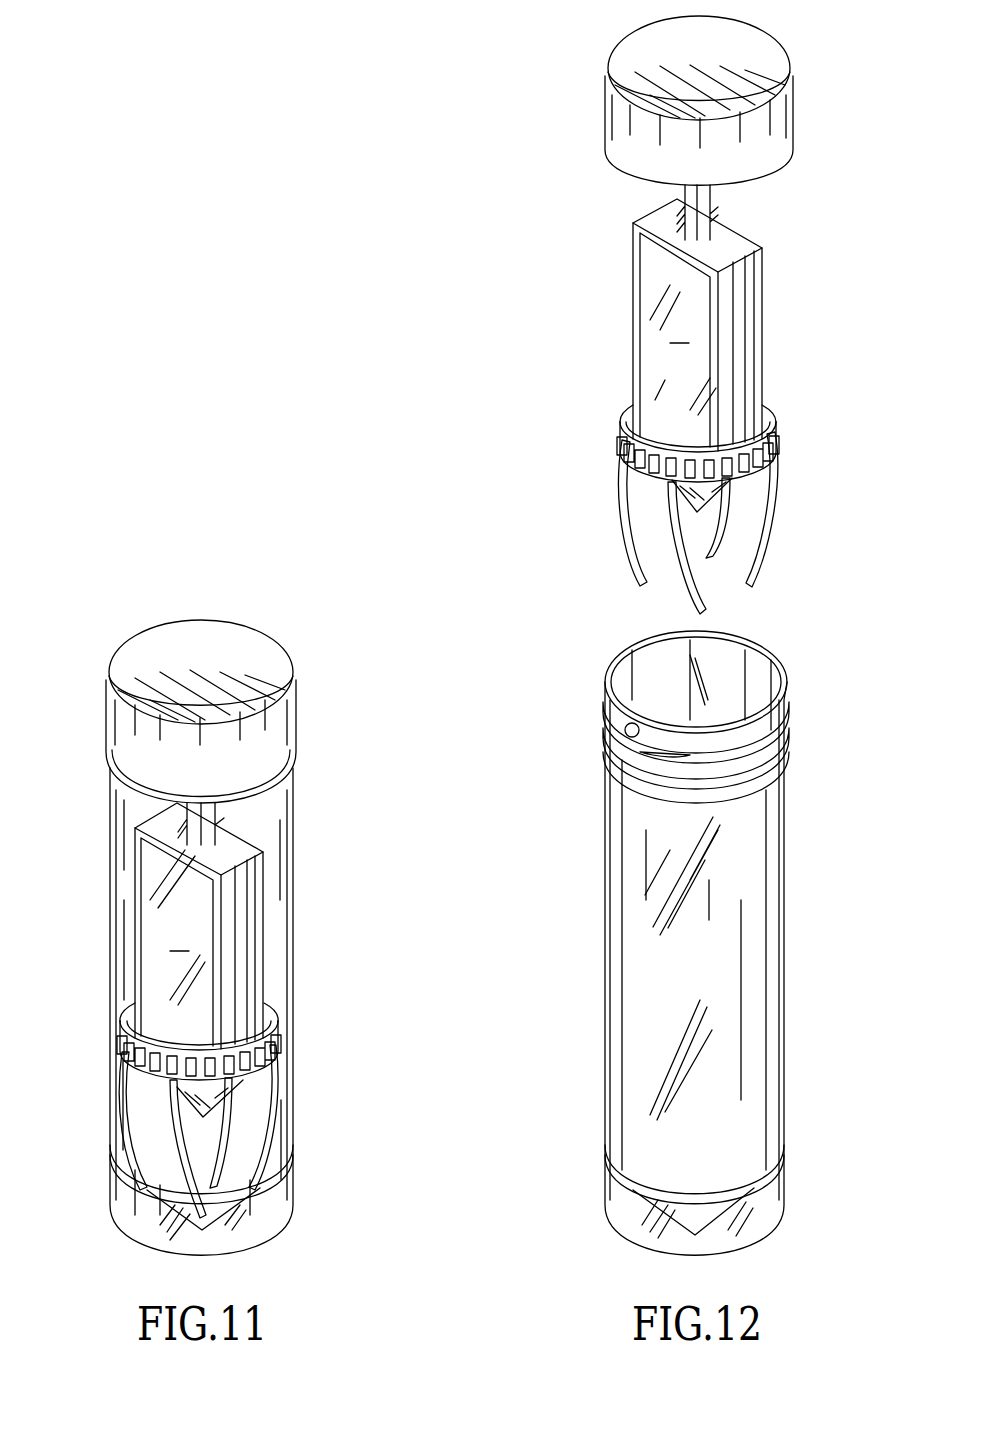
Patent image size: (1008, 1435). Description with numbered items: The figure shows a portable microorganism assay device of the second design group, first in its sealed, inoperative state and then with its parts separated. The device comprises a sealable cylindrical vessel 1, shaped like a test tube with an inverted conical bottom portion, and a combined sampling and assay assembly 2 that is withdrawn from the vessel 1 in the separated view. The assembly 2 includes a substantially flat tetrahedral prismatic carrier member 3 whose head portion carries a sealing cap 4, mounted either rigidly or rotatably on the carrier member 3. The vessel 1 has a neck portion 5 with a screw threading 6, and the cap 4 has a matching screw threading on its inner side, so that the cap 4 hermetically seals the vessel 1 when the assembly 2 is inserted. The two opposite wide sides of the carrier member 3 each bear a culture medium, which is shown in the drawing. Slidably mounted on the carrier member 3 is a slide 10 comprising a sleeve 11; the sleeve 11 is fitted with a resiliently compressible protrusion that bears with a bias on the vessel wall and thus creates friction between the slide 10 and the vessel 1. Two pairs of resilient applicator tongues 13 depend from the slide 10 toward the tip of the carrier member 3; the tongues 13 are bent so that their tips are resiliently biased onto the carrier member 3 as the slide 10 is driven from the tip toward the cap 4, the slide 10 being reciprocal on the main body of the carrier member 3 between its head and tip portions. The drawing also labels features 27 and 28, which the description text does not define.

In FIG. 11, the sealable cylindrical vessel 1 is at (290, 820).
In FIG. 12, the sealable cylindrical vessel 1 is at (703, 943).
In FIG. 11, the sampling and assay assembly 2 is at (204, 926).
In FIG. 12, the sampling and assay assembly 2 is at (665, 318).
In FIG. 11, the carrier member 3 is at (152, 900).
In FIG. 12, the carrier member 3 is at (720, 325).
In FIG. 11, the sealing cap 4 is at (182, 660).
In FIG. 12, the sealing cap 4 is at (780, 35).
In FIG. 12, the neck portion 5 is at (790, 703).
In FIG. 12, the screw threading 6 is at (790, 760).
In FIG. 11, the slide 10 is at (206, 1095).
In FIG. 12, the slide 10 is at (718, 492).
In FIG. 11, the sleeve 11 is at (193, 1026).
In FIG. 12, the sleeve 11 is at (710, 426).
In FIG. 11, the resilient applicator tongues 13 is at (198, 1131).
In FIG. 12, the resilient applicator tongues 13 is at (700, 612).
In FIG. 11, the notches 27 is at (122, 1050).
In FIG. 12, the notches 27 is at (621, 440).
In FIG. 12, the hole 28 is at (618, 708).